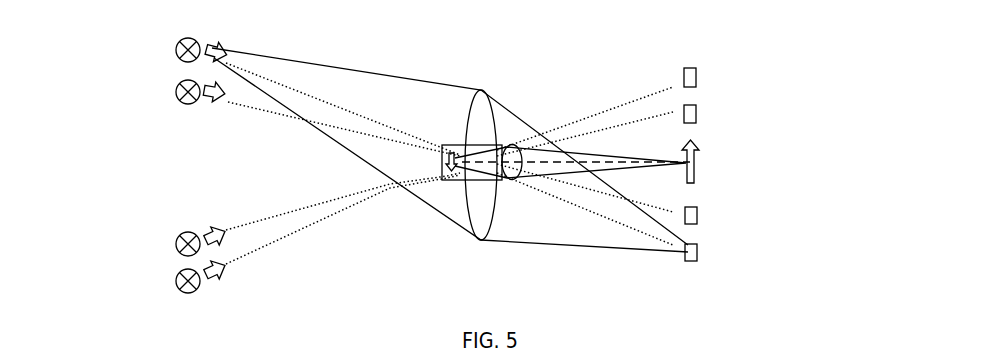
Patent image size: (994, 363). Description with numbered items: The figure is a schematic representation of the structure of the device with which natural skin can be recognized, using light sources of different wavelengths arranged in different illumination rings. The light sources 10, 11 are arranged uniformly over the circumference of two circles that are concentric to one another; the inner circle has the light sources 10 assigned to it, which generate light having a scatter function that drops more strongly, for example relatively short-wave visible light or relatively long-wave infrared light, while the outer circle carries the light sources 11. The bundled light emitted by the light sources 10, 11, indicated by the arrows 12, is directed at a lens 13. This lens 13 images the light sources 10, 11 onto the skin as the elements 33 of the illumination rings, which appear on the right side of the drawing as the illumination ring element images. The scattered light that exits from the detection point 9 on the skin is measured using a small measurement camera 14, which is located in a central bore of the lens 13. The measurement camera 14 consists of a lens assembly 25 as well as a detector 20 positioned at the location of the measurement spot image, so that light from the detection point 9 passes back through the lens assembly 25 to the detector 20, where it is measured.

The detection point 9 is at (701, 163).
The light source 10 is at (171, 92).
The light source 11 is at (171, 50).
The arrow 12 is at (216, 291).
The lens 13 is at (477, 218).
The measurement camera 14 is at (455, 143).
The detector 20 is at (446, 163).
The lens assembly 25 is at (514, 180).
The illumination ring element 33 is at (700, 78).